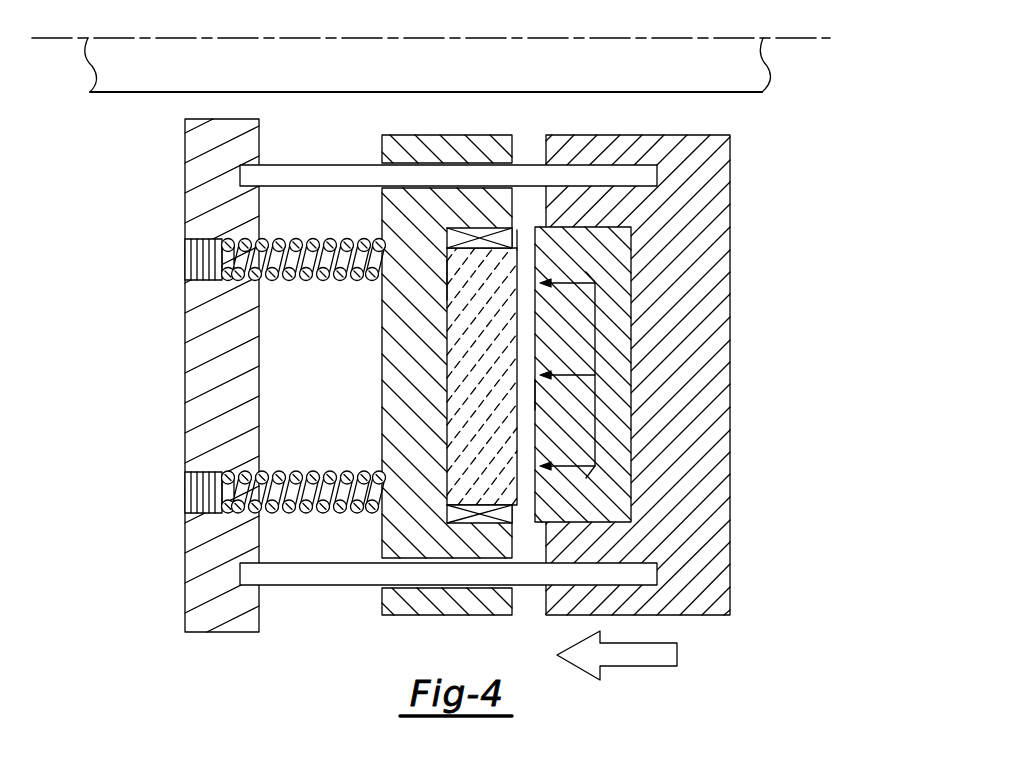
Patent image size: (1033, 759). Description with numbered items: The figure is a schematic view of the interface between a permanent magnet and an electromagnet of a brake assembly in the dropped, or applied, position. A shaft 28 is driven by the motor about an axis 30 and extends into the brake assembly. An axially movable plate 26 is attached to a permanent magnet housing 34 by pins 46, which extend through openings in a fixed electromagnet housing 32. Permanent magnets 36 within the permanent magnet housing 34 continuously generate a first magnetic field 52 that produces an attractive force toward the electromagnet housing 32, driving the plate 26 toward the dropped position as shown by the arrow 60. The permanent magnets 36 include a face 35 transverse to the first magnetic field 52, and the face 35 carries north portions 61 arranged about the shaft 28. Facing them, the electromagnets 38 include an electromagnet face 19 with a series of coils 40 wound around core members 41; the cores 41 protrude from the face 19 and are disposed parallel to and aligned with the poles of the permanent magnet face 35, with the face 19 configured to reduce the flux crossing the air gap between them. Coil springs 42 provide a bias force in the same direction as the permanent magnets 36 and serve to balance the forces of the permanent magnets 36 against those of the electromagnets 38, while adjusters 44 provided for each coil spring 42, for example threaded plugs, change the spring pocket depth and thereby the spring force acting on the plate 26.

The electromagnet face 19 is at (518, 234).
The plate 26 is at (185, 598).
The shaft 28 is at (727, 77).
The axis 30 is at (821, 40).
The electromagnet housing 32 is at (393, 615).
The permanent magnet housing 34 is at (705, 206).
The face 35 is at (530, 395).
The permanent magnets 36 is at (778, 364).
The electromagnets 38 is at (445, 293).
The coils 40 is at (478, 515).
The core members 41 is at (475, 345).
The coil springs 42 is at (292, 281).
The adjusters 44 is at (185, 263).
The pins 46 is at (335, 167).
The first magnetic field 52 is at (595, 366).
The arrow 60 is at (637, 667).
The north portions 61 is at (614, 257).